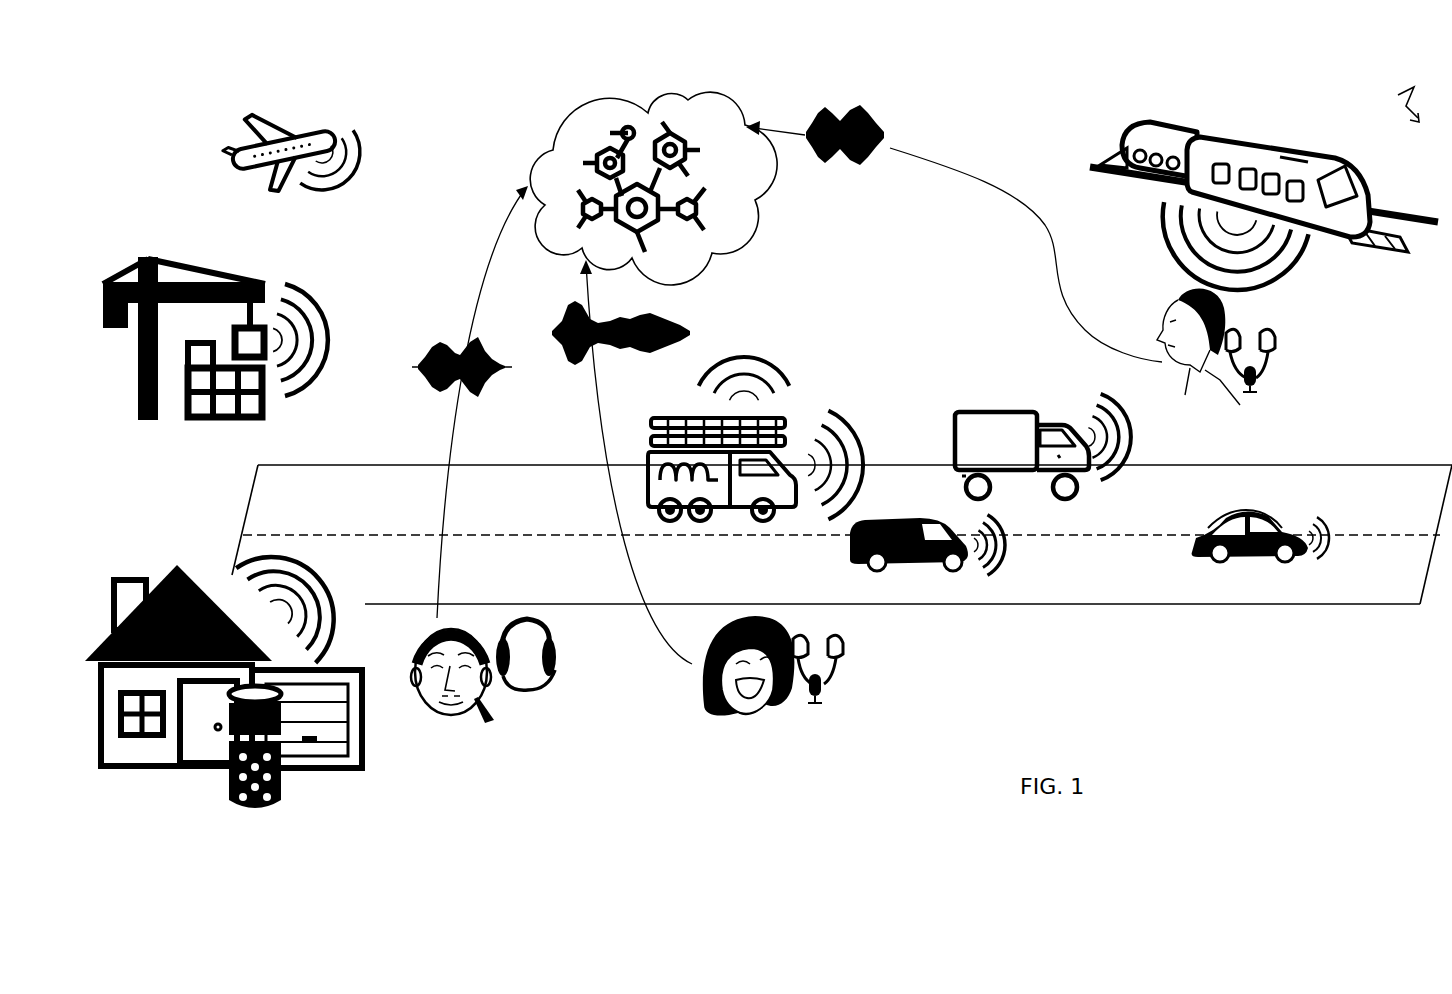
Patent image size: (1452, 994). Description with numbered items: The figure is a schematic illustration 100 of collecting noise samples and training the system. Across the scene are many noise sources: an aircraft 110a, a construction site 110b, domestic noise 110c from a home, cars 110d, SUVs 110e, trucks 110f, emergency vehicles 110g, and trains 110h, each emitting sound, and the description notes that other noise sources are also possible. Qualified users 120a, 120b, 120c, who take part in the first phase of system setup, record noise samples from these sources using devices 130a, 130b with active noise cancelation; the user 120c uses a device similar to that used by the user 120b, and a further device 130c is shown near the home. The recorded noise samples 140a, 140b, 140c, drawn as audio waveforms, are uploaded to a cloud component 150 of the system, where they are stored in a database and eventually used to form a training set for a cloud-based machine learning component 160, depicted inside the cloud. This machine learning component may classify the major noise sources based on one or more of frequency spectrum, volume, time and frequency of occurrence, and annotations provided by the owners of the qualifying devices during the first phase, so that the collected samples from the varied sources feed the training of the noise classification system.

The schematic illustration 100 is at (1410, 92).
The aircraft 110a is at (253, 152).
The construction site 110b is at (195, 272).
The domestic noise 110c is at (160, 580).
The cars 110d is at (1255, 555).
The SUVs 110e is at (918, 565).
The trucks 110f is at (1010, 412).
The emergency vehicles 110g is at (783, 440).
The trains 110h is at (1253, 145).
The qualified user 120a is at (460, 710).
The qualified user 120b is at (745, 712).
The qualified user 120c is at (1205, 375).
The device with active noise cancelation 130a is at (555, 668).
The device with active noise cancelation 130b is at (843, 665).
The smart speaker audio device 130c is at (283, 792).
The recorded noise sample 140a is at (443, 368).
The recorded noise sample 140b is at (672, 335).
The recorded noise sample 140c is at (878, 140).
The cloud component 150 is at (537, 160).
The cloud-based machine learning component 160 is at (688, 156).